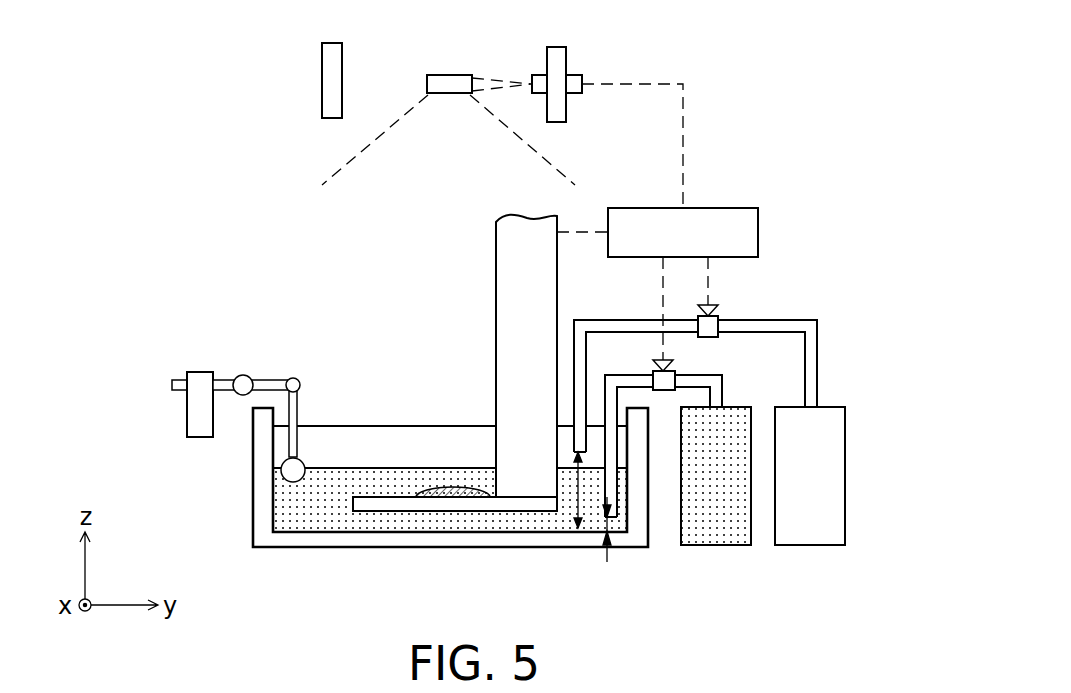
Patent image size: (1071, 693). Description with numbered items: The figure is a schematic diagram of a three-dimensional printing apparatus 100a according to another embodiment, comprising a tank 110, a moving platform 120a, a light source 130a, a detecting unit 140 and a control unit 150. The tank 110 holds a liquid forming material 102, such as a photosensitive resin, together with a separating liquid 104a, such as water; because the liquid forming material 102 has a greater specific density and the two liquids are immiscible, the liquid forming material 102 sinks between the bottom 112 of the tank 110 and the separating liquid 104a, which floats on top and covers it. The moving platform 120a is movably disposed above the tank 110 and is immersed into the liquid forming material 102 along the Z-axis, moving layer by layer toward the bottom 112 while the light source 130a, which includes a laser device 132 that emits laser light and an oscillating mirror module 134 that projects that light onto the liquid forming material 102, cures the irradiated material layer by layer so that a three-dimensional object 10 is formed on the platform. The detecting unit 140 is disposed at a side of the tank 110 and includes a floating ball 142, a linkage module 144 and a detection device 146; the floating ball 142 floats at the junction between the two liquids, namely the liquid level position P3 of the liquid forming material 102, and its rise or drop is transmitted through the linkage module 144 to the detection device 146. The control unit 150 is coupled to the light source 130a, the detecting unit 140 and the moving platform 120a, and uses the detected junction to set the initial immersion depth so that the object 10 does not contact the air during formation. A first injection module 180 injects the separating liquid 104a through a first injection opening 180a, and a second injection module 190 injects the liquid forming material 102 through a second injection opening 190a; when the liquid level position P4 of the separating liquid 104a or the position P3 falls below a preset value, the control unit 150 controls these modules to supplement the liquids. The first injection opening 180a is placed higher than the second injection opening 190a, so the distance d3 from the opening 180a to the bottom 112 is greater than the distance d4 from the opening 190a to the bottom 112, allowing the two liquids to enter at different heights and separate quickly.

The three-dimensional printing apparatus 100a is at (820, 658).
The three-dimensional object 10 is at (445, 487).
The liquid forming material 102 is at (320, 500).
The separating liquid 104a is at (370, 435).
The tank 110 is at (426, 468).
The bottom of the tank 112 is at (270, 541).
The moving platform 120a is at (499, 317).
The light source 130a is at (252, 165).
The laser device 132 is at (556, 52).
The oscillating mirror module 134 is at (452, 80).
The detecting unit 140 is at (218, 379).
The floating ball 142 is at (285, 462).
The linkage module 144 is at (268, 384).
The detection device 146 is at (187, 417).
The control unit 150 is at (760, 232).
The first injection module 180 is at (816, 548).
The first injection opening 180a is at (583, 438).
The second injection module 190 is at (722, 548).
The second injection opening 190a is at (611, 512).
The liquid level position of the liquid forming material P3 is at (264, 474).
The liquid level position of the separating liquid P4 is at (264, 432).
The relative distance from the first injection opening to the bottom of the tank d3 is at (577, 503).
The relative distance from the second injection opening to the bottom of the tank d4 is at (605, 524).